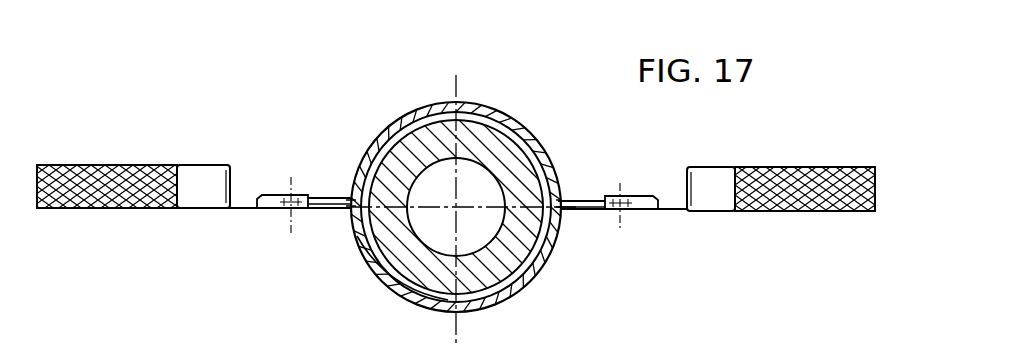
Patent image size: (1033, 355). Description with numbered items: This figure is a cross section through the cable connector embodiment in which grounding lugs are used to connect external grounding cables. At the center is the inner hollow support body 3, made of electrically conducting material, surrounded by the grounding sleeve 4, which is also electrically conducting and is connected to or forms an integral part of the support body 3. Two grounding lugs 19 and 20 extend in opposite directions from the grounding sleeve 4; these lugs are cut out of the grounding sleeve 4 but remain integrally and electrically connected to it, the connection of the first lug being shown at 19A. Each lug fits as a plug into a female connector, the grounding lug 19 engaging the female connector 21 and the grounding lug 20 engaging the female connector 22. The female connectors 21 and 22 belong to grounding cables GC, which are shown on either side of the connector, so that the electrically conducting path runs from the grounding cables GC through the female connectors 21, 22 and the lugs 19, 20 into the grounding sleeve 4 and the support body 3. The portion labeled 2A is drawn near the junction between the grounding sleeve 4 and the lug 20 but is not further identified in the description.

The grounding cable GC is at (108, 172).
The grounding lug 19 is at (323, 202).
The integral connection of grounding lug 19A is at (352, 210).
The female connector 21 is at (265, 202).
The female connector 22 is at (648, 212).
The grounding lug 20 is at (585, 200).
The cable portion 2A is at (565, 218).
The grounding sleeve 4 is at (488, 110).
The inner hollow support body 3 is at (503, 267).